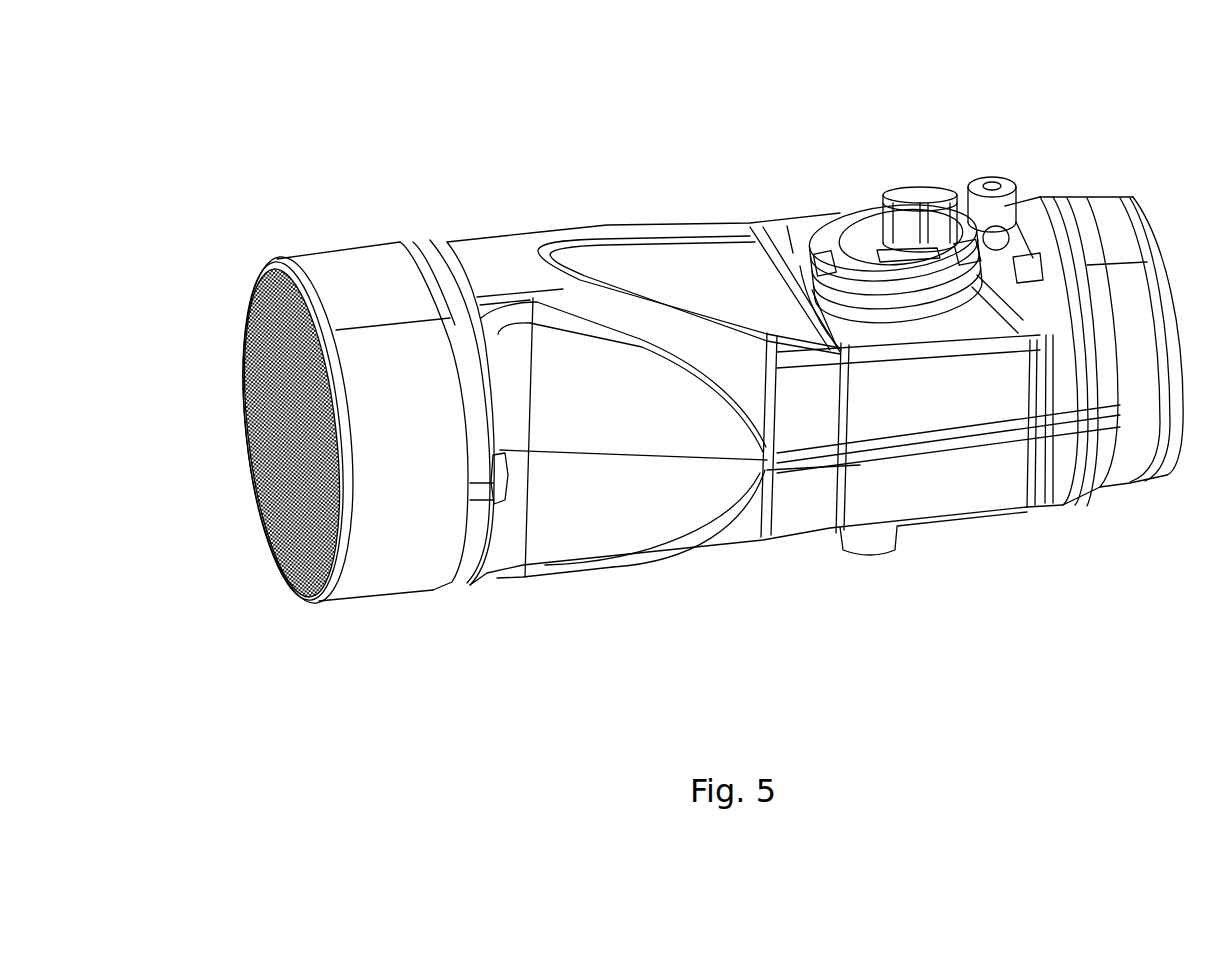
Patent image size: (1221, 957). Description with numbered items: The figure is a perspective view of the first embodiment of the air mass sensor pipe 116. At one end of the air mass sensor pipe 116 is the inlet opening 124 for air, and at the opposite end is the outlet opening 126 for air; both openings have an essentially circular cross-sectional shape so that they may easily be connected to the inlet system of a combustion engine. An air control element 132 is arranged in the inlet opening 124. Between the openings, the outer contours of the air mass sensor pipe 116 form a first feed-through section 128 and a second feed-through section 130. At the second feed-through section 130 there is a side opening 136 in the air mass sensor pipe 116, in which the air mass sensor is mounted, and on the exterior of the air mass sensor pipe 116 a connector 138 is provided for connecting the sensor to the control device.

The air mass sensor pipe 116 is at (690, 225).
The inlet opening 124 is at (248, 288).
The outlet opening 126 is at (1157, 223).
The first feed-through section 128 is at (500, 280).
The second feed-through section 130 is at (783, 227).
The air control element 132 is at (240, 322).
The side opening 136 is at (822, 232).
The connector 138 is at (912, 183).